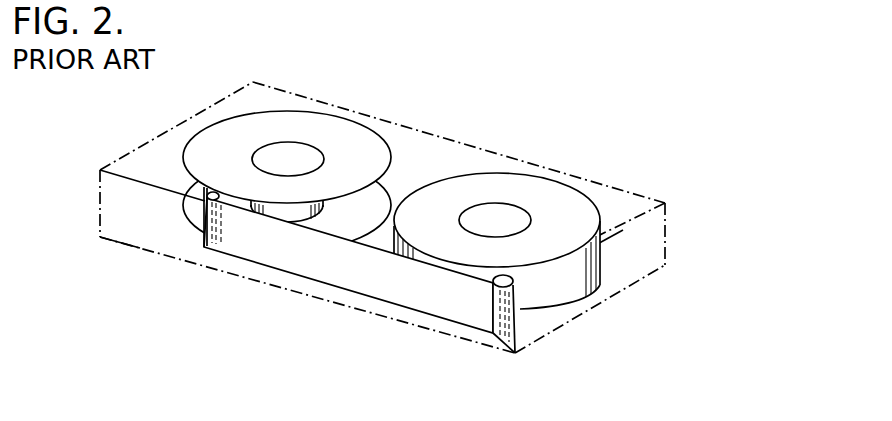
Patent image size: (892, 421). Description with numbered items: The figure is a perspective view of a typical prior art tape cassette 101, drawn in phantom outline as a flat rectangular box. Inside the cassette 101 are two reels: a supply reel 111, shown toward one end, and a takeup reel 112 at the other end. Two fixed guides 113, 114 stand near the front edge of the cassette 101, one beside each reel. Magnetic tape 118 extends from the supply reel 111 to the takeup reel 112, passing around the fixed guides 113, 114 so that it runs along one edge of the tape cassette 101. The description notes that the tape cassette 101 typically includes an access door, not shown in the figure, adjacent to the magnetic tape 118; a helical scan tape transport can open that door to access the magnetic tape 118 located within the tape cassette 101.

The tape cassette 101 is at (667, 242).
The supply reel 111 is at (590, 200).
The takeup reel 112 is at (376, 142).
The fixed guide 113 is at (493, 281).
The fixed guide 114 is at (194, 192).
The magnetic tape 118 is at (378, 272).